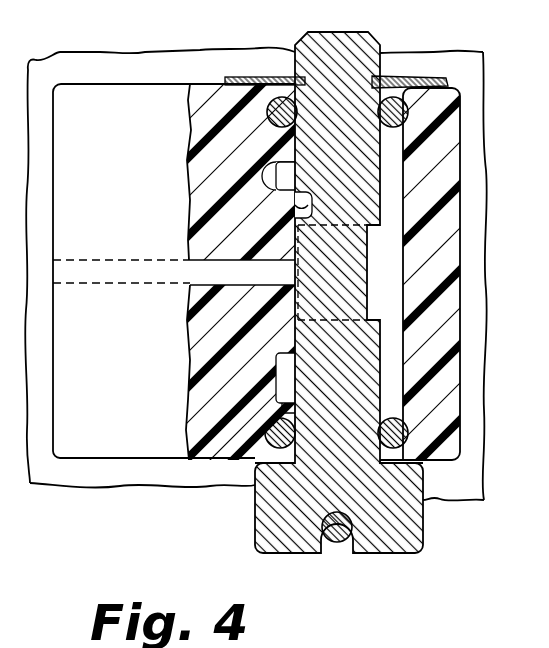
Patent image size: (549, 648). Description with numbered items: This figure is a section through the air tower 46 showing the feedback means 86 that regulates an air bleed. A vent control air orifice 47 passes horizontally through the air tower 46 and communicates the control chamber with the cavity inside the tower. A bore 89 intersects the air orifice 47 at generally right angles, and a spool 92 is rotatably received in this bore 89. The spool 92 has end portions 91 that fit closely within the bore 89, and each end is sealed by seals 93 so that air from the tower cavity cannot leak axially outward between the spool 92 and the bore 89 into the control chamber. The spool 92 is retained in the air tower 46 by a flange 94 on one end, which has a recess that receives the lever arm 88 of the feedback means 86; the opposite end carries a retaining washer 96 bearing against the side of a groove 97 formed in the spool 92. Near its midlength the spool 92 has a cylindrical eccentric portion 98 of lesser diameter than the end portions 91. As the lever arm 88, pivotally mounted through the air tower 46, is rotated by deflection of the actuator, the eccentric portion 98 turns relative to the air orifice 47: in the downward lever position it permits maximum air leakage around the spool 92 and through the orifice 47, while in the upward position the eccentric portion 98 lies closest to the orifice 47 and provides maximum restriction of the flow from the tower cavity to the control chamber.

The air tower 46 is at (131, 84).
The vent control air orifice 47 is at (190, 262).
The feedback means 86 is at (178, 495).
The lever arm 88 is at (337, 543).
The bore 89 is at (295, 203).
The end portions 91 is at (380, 375).
The spool 92 is at (436, 520).
The seals 93 is at (405, 131).
The flange 94 is at (255, 515).
The retaining washer 96 is at (268, 77).
The groove 97 is at (376, 77).
The eccentric portion 98 is at (367, 274).